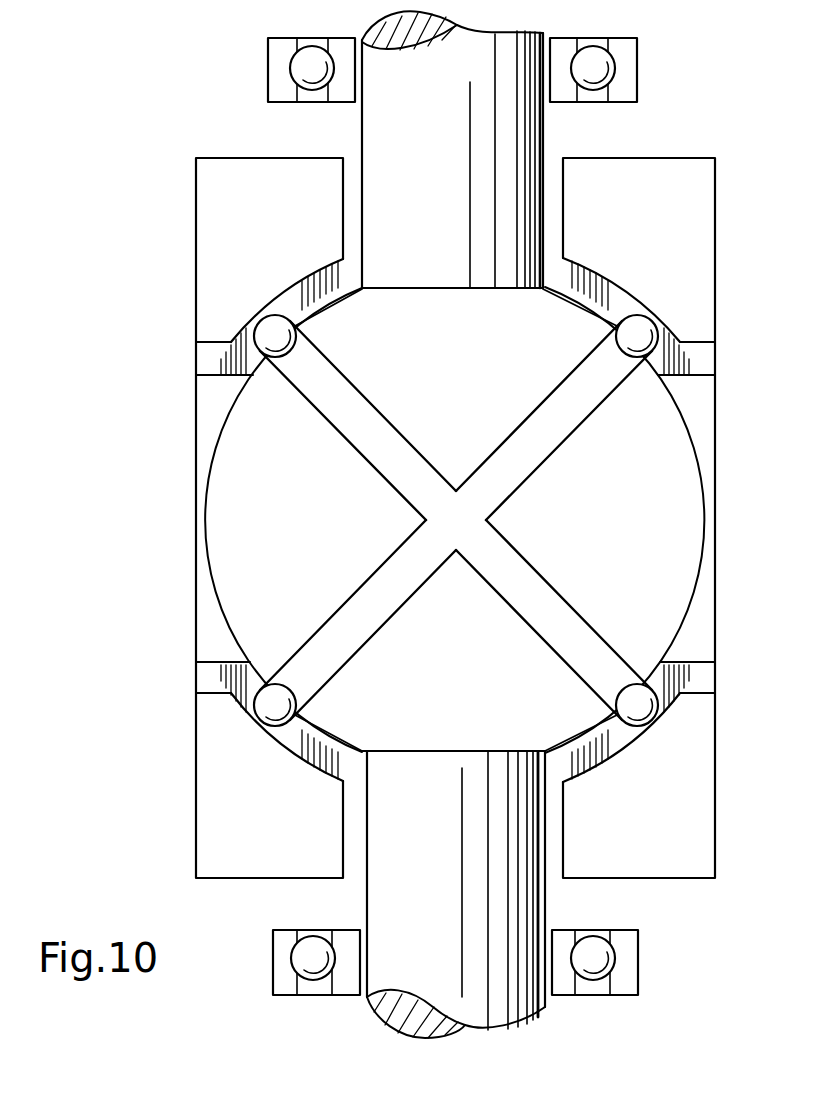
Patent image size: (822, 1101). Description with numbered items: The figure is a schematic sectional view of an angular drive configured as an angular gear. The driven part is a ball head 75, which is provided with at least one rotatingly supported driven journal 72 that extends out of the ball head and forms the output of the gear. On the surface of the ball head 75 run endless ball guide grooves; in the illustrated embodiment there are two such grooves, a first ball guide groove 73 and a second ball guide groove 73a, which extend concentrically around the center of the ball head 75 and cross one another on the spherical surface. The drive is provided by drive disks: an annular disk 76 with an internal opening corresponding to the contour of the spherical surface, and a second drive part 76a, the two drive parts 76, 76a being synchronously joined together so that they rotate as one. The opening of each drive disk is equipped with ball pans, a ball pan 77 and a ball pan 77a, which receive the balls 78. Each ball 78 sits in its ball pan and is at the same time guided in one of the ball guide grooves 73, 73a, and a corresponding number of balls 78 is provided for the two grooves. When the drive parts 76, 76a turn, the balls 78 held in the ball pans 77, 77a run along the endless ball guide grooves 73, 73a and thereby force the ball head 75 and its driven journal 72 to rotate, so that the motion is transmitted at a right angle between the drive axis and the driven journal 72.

The driven journal 72 is at (362, 132).
The ball guide groove 73 is at (326, 382).
The ball guide groove 73a is at (572, 407).
The ball head 75 is at (213, 493).
The annular disk 76 is at (206, 199).
The drive part 76a is at (700, 184).
The ball pan 77 is at (298, 296).
The ball pan 77a is at (597, 293).
The ball 78 is at (262, 337).